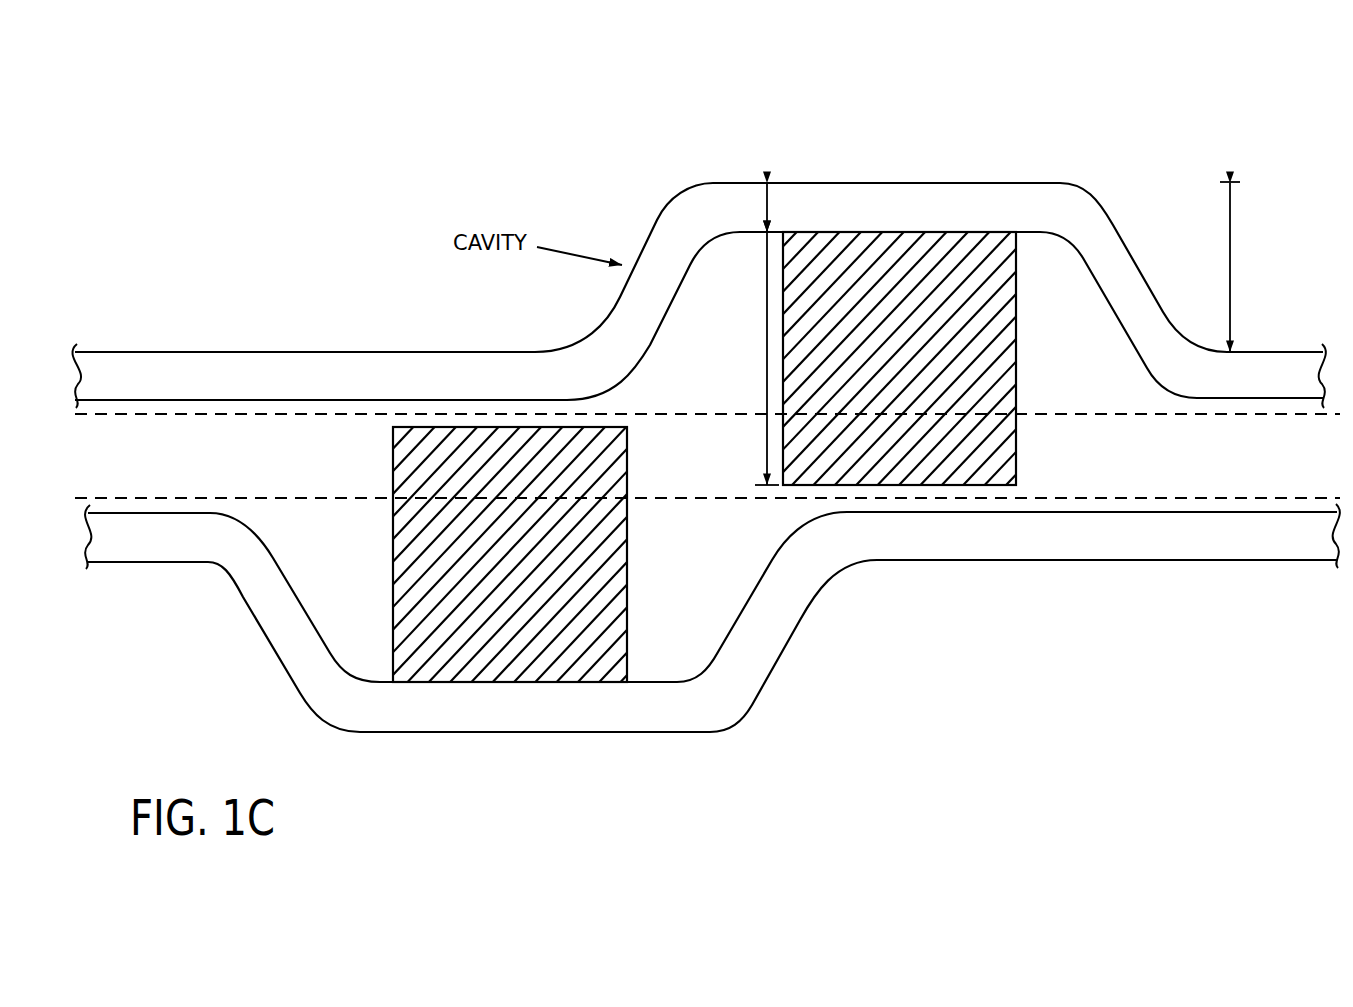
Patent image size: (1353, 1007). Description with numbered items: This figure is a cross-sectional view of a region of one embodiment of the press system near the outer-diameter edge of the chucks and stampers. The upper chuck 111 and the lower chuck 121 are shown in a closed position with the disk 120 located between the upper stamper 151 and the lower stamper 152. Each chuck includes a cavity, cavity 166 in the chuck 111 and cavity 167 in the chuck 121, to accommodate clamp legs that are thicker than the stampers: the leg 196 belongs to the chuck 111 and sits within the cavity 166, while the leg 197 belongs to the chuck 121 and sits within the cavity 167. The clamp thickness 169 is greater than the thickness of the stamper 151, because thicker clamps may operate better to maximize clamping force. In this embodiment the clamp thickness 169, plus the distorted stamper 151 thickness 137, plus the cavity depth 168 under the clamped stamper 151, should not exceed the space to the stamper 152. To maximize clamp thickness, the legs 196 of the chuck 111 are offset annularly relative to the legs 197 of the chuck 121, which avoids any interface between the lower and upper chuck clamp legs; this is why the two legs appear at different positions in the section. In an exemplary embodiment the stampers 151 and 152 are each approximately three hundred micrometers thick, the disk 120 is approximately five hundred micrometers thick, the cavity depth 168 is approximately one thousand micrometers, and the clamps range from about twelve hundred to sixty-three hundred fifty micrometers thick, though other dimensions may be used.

The chuck 111 is at (891, 107).
The stamper 151 is at (991, 220).
The cavity 166 is at (1120, 160).
The cavity depth 168 is at (1229, 233).
The stamper thickness 137 is at (770, 211).
The clamp thickness 169 is at (767, 297).
The disk 120 is at (1201, 466).
The leg 196 is at (895, 468).
The leg 197 is at (534, 639).
The stamper 152 is at (1156, 553).
The chuck 121 is at (1124, 726).
The cavity 167 is at (776, 666).